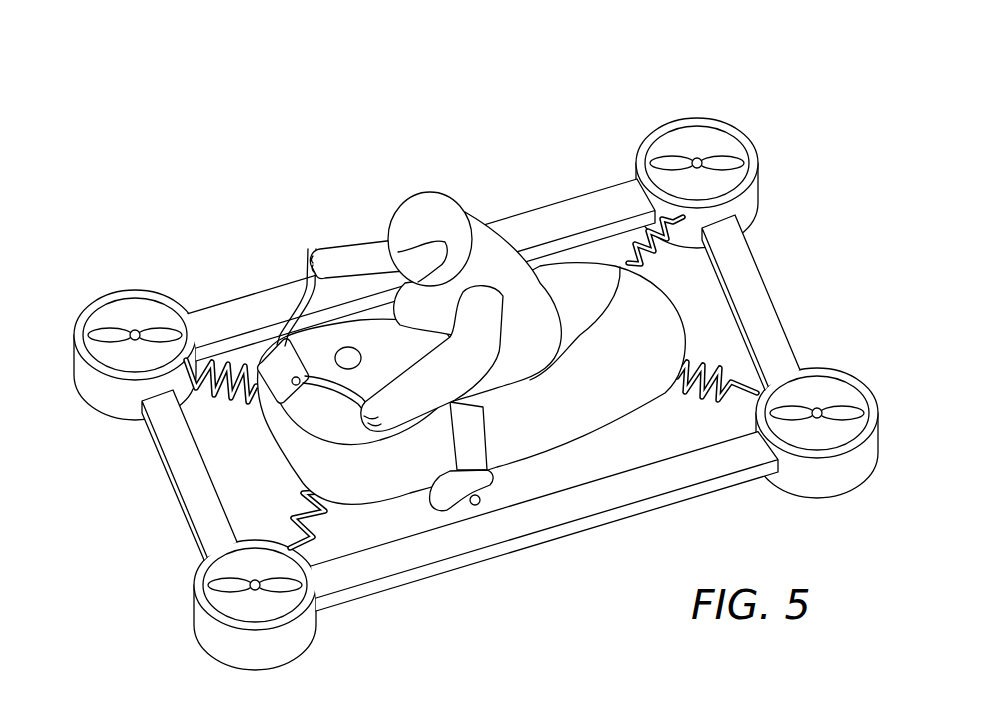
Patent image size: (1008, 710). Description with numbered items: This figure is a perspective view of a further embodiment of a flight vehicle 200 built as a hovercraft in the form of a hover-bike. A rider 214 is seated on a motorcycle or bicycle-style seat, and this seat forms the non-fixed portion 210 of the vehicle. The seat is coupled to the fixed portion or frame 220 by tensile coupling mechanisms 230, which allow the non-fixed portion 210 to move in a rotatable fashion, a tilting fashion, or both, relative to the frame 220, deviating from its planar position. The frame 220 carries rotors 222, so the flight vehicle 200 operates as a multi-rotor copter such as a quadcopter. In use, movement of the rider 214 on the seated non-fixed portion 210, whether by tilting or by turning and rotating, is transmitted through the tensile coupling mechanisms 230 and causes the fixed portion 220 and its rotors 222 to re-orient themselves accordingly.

The flight vehicle 200 is at (486, 356).
The non-fixed portion 210 is at (303, 460).
The rider 214 is at (497, 267).
The fixed portion or frame 220 is at (543, 220).
The rotors 222 is at (701, 118).
The tensile coupling mechanisms 230 is at (646, 262).